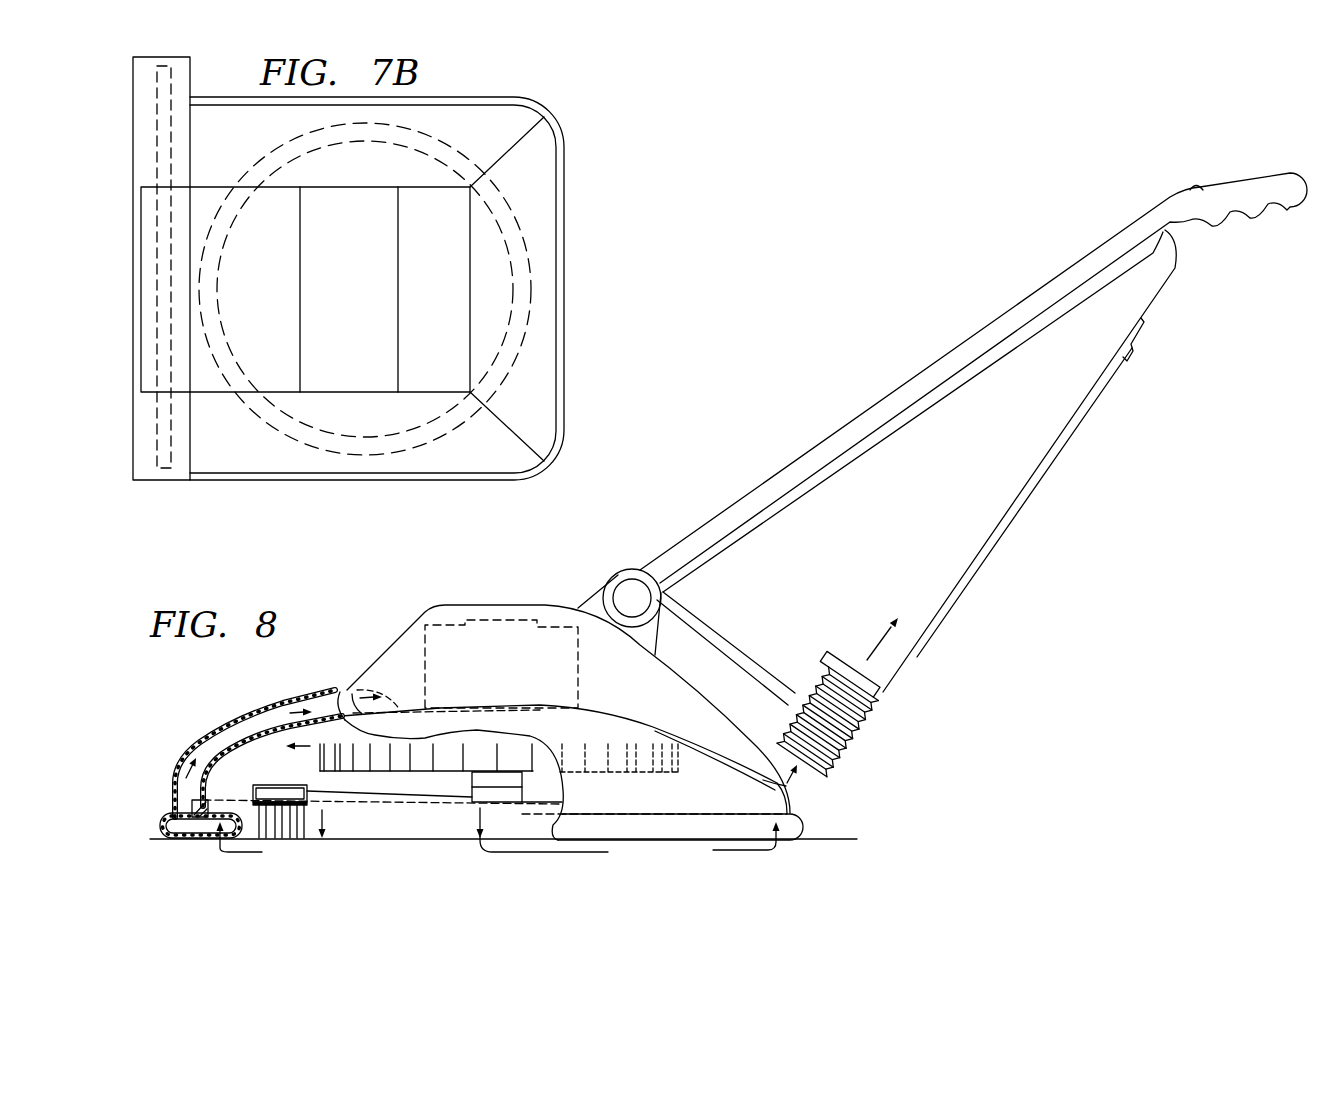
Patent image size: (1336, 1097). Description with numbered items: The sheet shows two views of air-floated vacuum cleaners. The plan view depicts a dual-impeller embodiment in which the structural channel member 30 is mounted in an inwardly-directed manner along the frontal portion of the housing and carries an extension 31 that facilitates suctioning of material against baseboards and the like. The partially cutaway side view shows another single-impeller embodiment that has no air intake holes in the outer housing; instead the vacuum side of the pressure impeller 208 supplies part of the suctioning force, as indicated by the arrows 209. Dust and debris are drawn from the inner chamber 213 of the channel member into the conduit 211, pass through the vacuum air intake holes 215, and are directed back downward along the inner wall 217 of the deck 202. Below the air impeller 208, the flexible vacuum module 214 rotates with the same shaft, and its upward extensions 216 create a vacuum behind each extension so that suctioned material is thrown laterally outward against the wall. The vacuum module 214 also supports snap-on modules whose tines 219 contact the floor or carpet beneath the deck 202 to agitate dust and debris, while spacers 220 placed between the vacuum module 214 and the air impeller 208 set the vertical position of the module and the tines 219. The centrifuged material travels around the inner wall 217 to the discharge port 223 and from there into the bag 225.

In FIG. 7B, the structural channel member 30 is at (142, 152).
In FIG. 8, the structural channel member 30 is at (250, 761).
In FIG. 7B, the extension 31 is at (126, 83).
In FIG. 8, the deck 202 is at (250, 736).
In FIG. 8, the air impeller 208 is at (400, 772).
In FIG. 8, the arrows 209 is at (298, 705).
In FIG. 8, the conduit 211 is at (206, 746).
In FIG. 8, the inner chamber 213 is at (188, 839).
In FIG. 8, the vacuum module 214 is at (353, 805).
In FIG. 8, the vacuum air intake holes 215 is at (350, 692).
In FIG. 8, the upward extensions 216 is at (312, 791).
In FIG. 8, the inner wall 217 is at (222, 764).
In FIG. 8, the tines 219 is at (288, 839).
In FIG. 8, the spacers 220 is at (468, 803).
In FIG. 8, the discharge port 223 is at (805, 784).
In FIG. 8, the bag 225 is at (1152, 308).